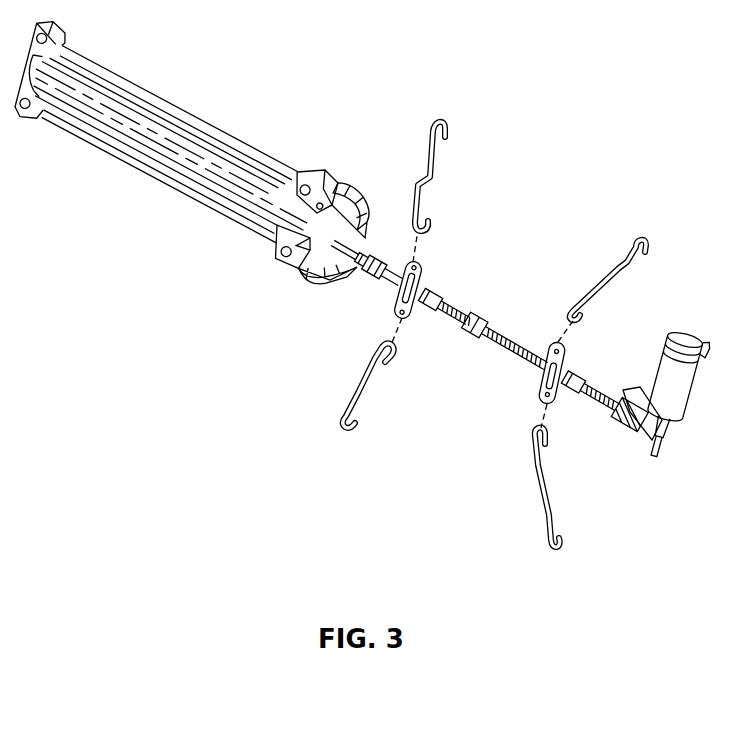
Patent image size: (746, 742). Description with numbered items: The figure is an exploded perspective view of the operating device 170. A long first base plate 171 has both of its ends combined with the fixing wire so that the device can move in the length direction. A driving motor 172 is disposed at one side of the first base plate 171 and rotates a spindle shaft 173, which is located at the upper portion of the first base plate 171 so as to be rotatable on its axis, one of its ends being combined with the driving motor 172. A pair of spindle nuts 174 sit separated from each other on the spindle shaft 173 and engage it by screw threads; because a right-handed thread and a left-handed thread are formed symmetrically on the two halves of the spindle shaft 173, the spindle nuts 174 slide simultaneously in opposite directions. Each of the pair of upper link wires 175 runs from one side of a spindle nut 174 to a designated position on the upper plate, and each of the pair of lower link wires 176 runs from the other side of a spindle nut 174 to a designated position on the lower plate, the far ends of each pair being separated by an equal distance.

The operating device 170 is at (240, 271).
The first base plate 171 is at (311, 275).
The driving motor 172 is at (684, 332).
The spindle shaft 173 is at (450, 312).
The spindle nuts 174 is at (553, 345).
The upper link wires 175 is at (607, 280).
The lower link wires 176 is at (353, 418).